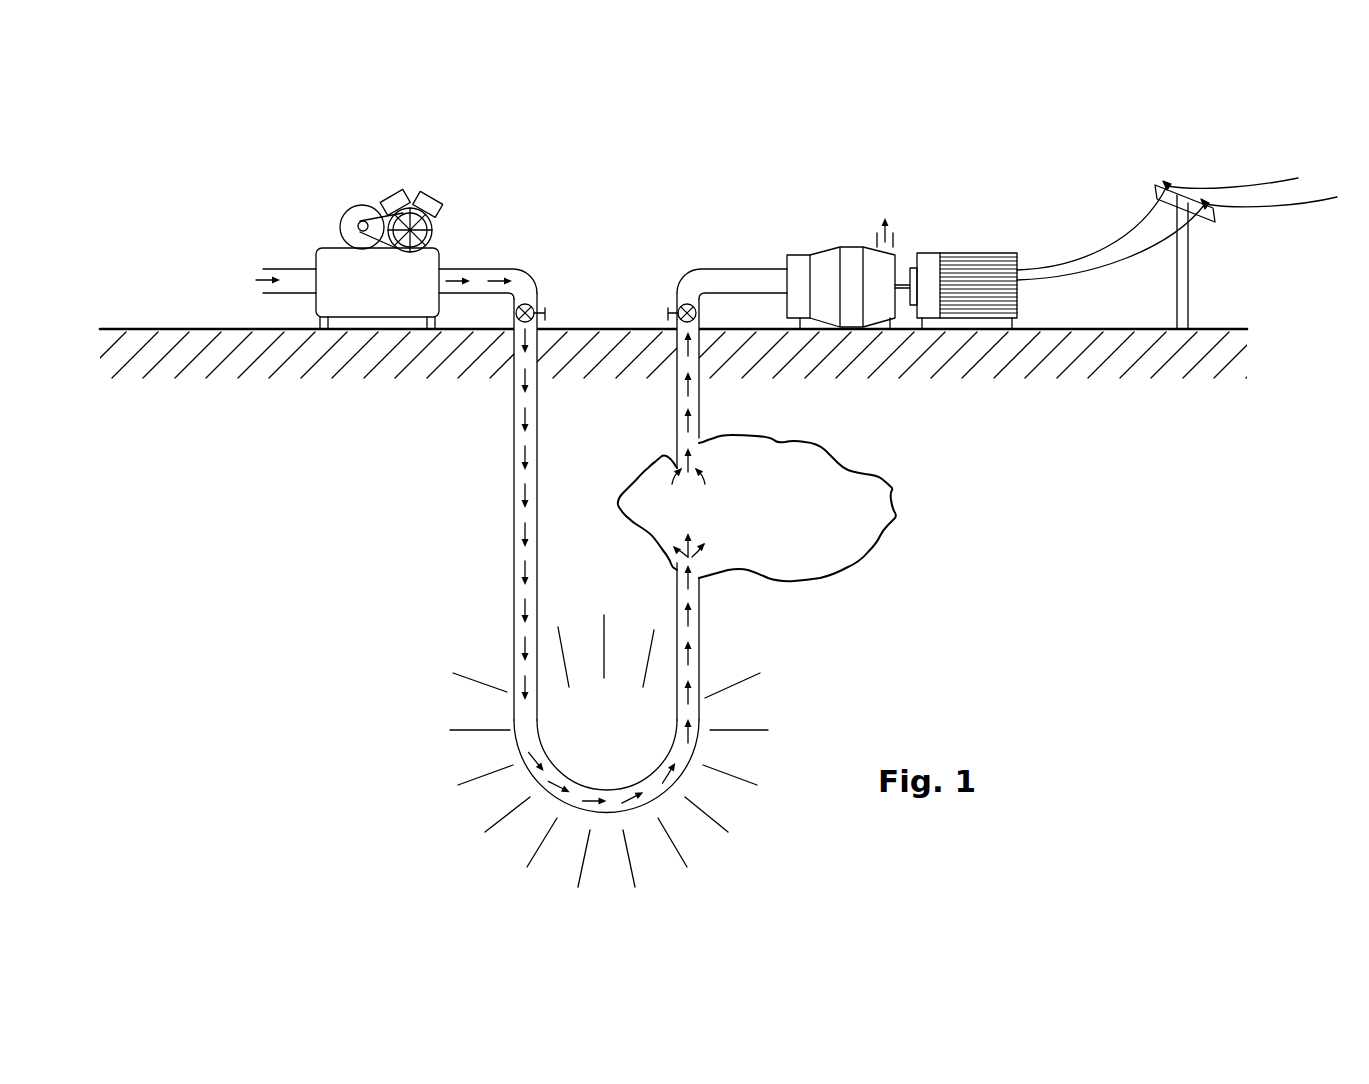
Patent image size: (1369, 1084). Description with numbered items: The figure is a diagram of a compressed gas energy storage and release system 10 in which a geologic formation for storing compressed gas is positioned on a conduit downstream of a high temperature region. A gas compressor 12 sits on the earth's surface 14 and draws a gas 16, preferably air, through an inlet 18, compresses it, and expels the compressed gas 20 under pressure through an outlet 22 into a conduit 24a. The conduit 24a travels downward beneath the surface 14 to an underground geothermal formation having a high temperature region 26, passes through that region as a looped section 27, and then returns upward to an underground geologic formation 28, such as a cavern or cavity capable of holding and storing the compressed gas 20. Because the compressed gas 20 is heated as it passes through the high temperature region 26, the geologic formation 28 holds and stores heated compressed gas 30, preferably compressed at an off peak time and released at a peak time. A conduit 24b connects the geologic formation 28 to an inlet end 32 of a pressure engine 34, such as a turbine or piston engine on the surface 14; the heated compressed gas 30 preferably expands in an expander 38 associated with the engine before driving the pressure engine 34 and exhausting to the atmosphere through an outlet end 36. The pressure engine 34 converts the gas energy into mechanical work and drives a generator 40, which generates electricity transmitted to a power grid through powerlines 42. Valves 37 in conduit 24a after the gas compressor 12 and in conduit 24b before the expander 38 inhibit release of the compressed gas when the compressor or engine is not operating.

The compressed gas energy storage and release (CGESR) system 10 is at (910, 195).
The gas compressor 12 is at (383, 296).
The earth's surface 14 is at (574, 329).
The gas 16 is at (260, 288).
The inlet 18 is at (297, 268).
The compressed gas 20 is at (527, 458).
The outlet 22 is at (445, 262).
The conduit 24a is at (514, 478).
The conduit 24b is at (700, 416).
The high temperature region 26 is at (621, 754).
The looped section 27 is at (548, 797).
The underground geologic formation 28 is at (893, 488).
The heated compressed gas 30 is at (688, 393).
The inlet end 32 is at (785, 260).
The pressure engine 34 is at (848, 247).
The outlet end 36 is at (877, 240).
The valves 37 is at (550, 306).
The expander 38 is at (797, 255).
The generator 40 is at (950, 253).
The powerlines 42 is at (1163, 248).